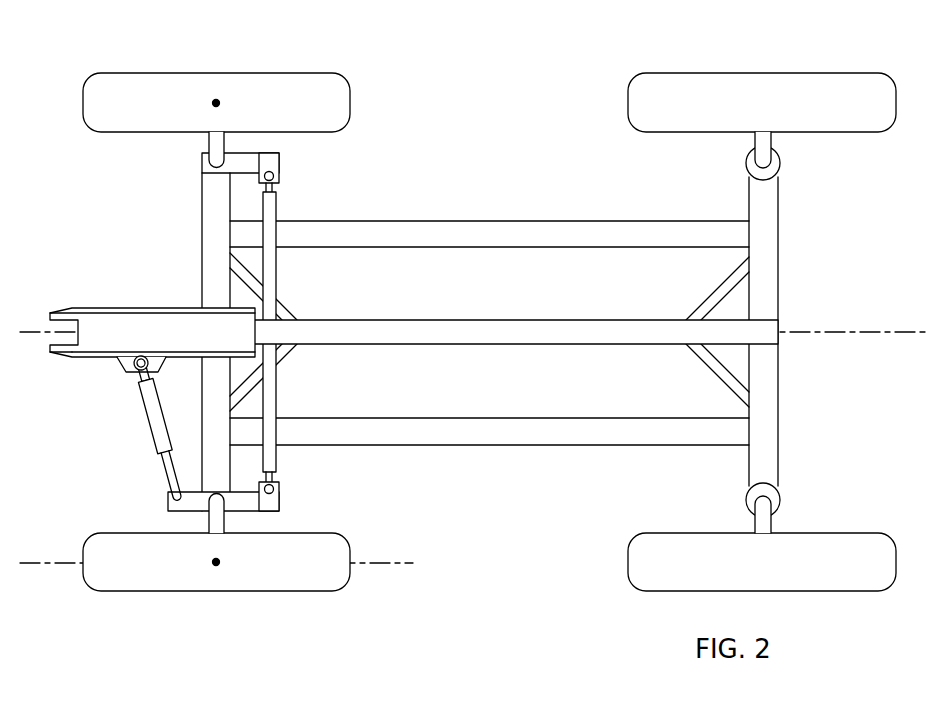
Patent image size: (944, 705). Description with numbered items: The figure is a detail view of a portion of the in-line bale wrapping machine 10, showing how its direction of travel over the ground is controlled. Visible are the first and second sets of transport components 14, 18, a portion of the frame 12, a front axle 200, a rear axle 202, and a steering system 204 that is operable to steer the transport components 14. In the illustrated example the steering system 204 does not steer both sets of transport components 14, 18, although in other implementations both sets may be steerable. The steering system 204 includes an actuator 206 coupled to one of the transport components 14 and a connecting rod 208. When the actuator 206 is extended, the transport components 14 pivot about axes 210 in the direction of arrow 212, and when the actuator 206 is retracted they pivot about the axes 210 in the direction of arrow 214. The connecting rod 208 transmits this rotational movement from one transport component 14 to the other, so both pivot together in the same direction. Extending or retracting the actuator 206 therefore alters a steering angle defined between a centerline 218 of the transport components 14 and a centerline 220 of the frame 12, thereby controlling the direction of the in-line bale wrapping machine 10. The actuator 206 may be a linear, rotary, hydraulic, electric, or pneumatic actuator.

The in-line bale wrapping machine 10 is at (482, 600).
The frame 12 is at (495, 430).
The first set of transport components 14 is at (264, 101).
The second set of transport components 18 is at (808, 96).
The front axle 200 is at (218, 214).
The rear axle 202 is at (765, 253).
The steering system 204 is at (158, 261).
The actuator 206 is at (158, 429).
The connecting rod 208 is at (268, 262).
The axes 210 is at (216, 103).
The arrow 212 is at (253, 602).
The arrow 214 is at (167, 622).
The centerline of the transport components 218 is at (393, 562).
The centerline of the frame 220 is at (29, 330).